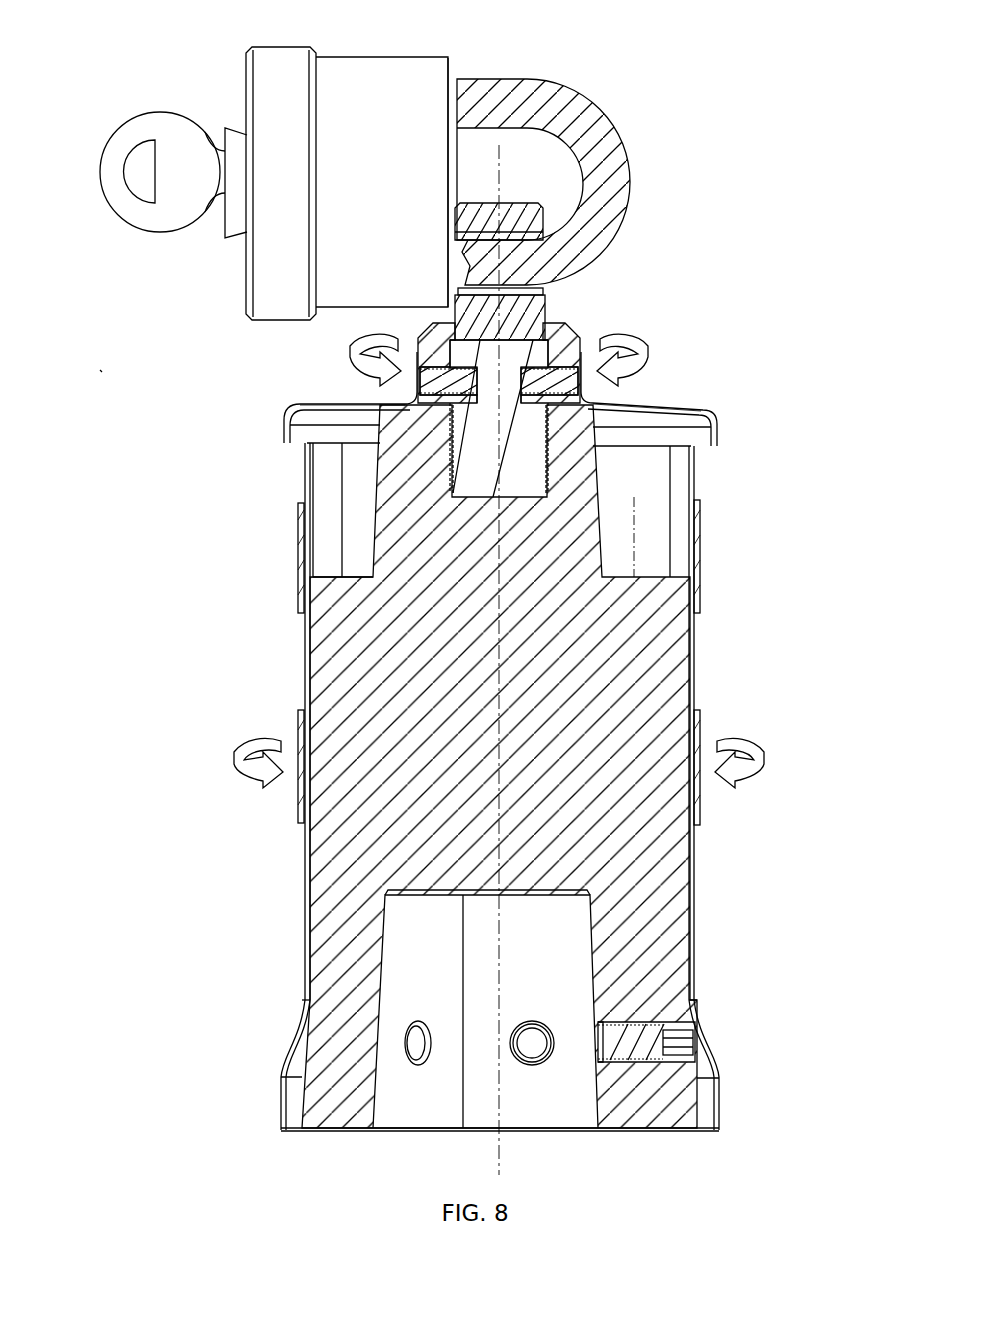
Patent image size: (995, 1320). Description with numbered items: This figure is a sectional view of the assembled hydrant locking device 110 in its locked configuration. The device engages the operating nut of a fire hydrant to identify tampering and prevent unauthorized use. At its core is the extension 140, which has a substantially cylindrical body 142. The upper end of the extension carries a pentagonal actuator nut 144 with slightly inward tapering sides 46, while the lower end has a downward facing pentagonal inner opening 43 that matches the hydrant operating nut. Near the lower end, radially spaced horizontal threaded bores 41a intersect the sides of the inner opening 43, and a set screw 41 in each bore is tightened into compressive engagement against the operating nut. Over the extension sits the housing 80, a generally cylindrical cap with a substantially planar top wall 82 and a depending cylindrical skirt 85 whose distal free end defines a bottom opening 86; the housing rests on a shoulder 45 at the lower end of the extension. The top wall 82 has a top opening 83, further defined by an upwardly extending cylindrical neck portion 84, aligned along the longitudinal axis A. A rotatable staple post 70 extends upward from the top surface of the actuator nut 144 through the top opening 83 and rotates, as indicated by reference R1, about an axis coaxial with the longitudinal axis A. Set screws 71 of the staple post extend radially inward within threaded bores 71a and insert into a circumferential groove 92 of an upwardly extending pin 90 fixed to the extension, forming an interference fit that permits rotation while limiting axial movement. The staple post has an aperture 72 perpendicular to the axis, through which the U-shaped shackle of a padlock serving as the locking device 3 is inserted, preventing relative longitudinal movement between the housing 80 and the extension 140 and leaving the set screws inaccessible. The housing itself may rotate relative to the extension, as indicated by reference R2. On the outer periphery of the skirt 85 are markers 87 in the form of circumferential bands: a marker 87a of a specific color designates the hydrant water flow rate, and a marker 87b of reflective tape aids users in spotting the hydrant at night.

The locking device 3 is at (351, 87).
The longitudinal axis A is at (545, 203).
The staple post 70 is at (600, 166).
The aperture 72 is at (546, 292).
The set screw 71 is at (549, 346).
The rotation of staple post R1 is at (612, 336).
The threaded bore 71a is at (598, 373).
The top wall 82 is at (682, 404).
The cylindrical neck portion 84 is at (586, 391).
The housing 80 is at (699, 472).
The actuator nut 144 is at (626, 527).
The marker 87a is at (701, 590).
The marker 87 is at (702, 611).
The extension 140 is at (640, 671).
The marker 87b is at (700, 796).
The cylindrical skirt 85 is at (704, 919).
The threaded bore 41a is at (418, 1021).
The body 142 is at (698, 1011).
The set screw 41 is at (648, 1044).
The bottom opening 86 is at (293, 1122).
The inner opening 43 is at (402, 1106).
The shoulder 45 is at (305, 1000).
The rotation of housing R2 is at (243, 771).
The hydrant locking device 110 is at (107, 381).
The circumferential groove 92 is at (442, 312).
The top opening 83 is at (430, 327).
The tapering sides 46 is at (372, 466).
The pin 90 is at (380, 513).